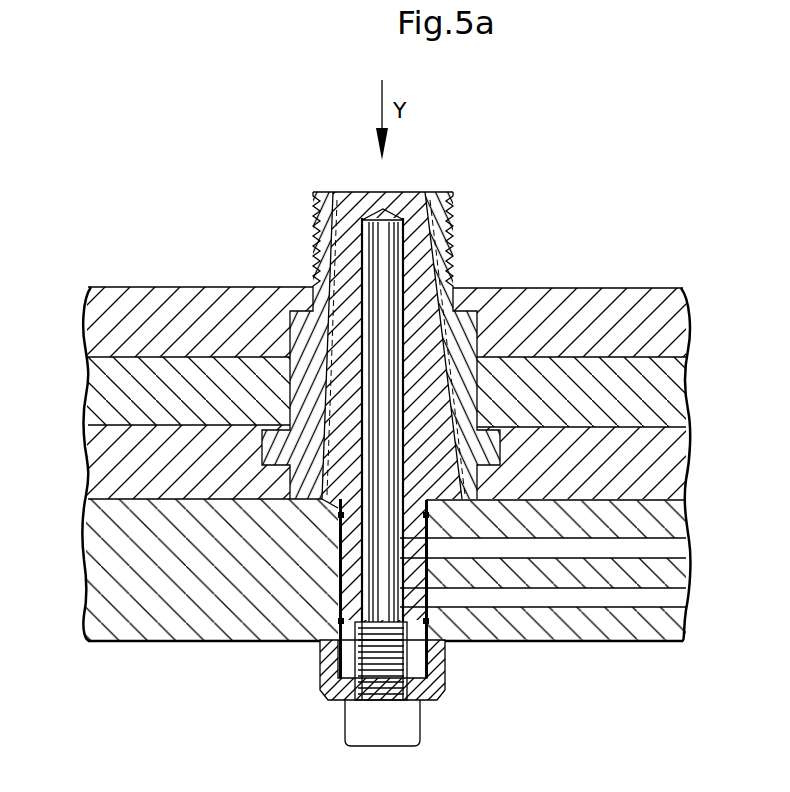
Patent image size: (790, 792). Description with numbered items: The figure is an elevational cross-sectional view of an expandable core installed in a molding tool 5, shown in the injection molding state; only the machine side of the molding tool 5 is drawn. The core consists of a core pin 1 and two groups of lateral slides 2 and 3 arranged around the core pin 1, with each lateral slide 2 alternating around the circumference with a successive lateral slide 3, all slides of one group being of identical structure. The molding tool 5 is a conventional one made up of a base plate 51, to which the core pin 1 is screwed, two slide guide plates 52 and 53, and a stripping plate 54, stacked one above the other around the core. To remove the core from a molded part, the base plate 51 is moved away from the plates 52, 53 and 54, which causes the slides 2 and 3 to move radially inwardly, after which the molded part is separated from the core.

The core pin 1 is at (333, 633).
The lateral slide 2 is at (306, 306).
The lateral slide 3 is at (464, 318).
The molding tool 5 is at (70, 569).
The base plate 51 is at (163, 610).
The slide guide plate 52 is at (107, 472).
The slide guide plate 53 is at (103, 388).
The stripping plate 54 is at (247, 298).